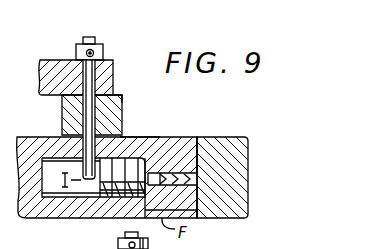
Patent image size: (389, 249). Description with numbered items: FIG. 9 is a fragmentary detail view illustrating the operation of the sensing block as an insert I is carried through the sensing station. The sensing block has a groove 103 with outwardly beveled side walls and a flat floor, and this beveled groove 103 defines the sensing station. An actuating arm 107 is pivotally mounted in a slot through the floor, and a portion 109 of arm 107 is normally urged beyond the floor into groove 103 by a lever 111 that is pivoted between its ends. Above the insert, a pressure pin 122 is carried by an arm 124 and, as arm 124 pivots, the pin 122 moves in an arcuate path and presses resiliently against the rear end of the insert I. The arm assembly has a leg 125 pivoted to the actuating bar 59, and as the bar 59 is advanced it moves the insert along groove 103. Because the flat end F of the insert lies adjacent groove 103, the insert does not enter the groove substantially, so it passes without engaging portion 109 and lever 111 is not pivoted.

The actuating bar 59 is at (131, 139).
The groove 103 is at (171, 137).
The actuating arm 107 is at (197, 137).
The portion of arm 109 is at (168, 160).
The lever 111 is at (240, 185).
The pressure pin 122 is at (88, 113).
The arm 124 is at (43, 63).
The leg 125 is at (119, 96).